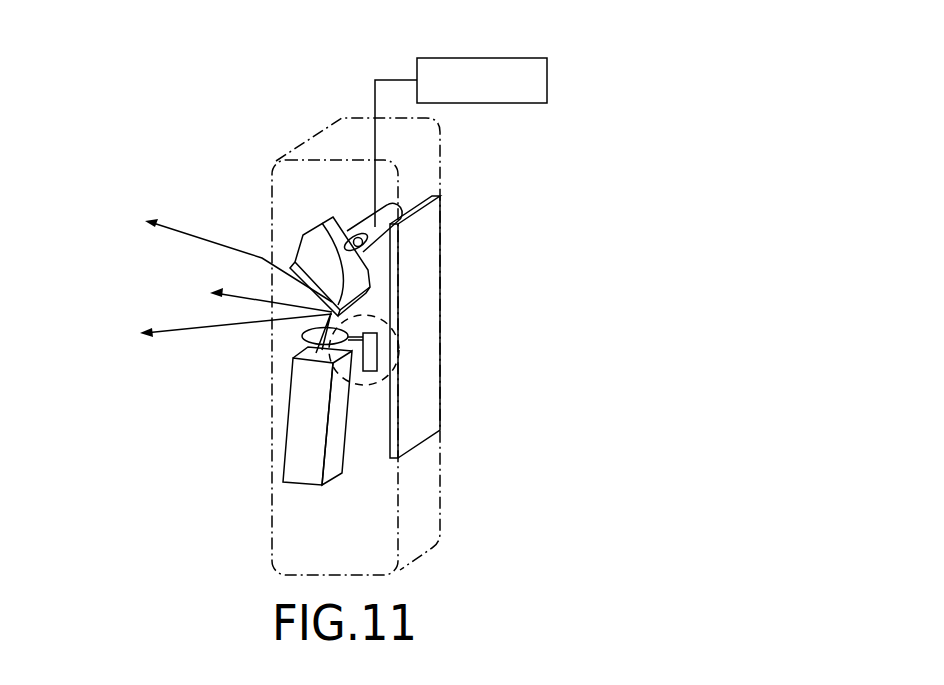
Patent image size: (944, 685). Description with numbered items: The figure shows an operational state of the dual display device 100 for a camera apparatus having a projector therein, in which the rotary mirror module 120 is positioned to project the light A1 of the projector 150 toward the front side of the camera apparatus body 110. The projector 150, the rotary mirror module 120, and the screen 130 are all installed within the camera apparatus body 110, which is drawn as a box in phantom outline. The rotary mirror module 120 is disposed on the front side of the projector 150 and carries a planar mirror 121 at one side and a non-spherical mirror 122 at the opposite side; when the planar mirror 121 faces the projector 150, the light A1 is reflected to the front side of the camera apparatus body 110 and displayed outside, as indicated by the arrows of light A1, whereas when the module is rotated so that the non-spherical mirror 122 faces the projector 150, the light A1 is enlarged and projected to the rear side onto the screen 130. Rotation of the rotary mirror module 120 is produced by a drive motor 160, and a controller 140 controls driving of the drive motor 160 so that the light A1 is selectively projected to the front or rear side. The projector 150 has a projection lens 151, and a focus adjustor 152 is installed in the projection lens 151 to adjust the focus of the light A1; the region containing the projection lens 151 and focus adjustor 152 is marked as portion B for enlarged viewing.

The dual display device 100 is at (220, 78).
The camera apparatus body 110 is at (272, 520).
The rotary mirror module 120 is at (132, 142).
The planar mirror 121 is at (297, 266).
The non-spherical mirror 122 is at (308, 234).
The screen 130 is at (424, 266).
The controller 140 is at (549, 80).
The projector 150 is at (300, 418).
The projection lens 151 is at (302, 336).
The focus adjustor 152 is at (378, 343).
The drive motor 160 is at (365, 228).
The light A1 is at (193, 237).
The portion B is at (390, 393).